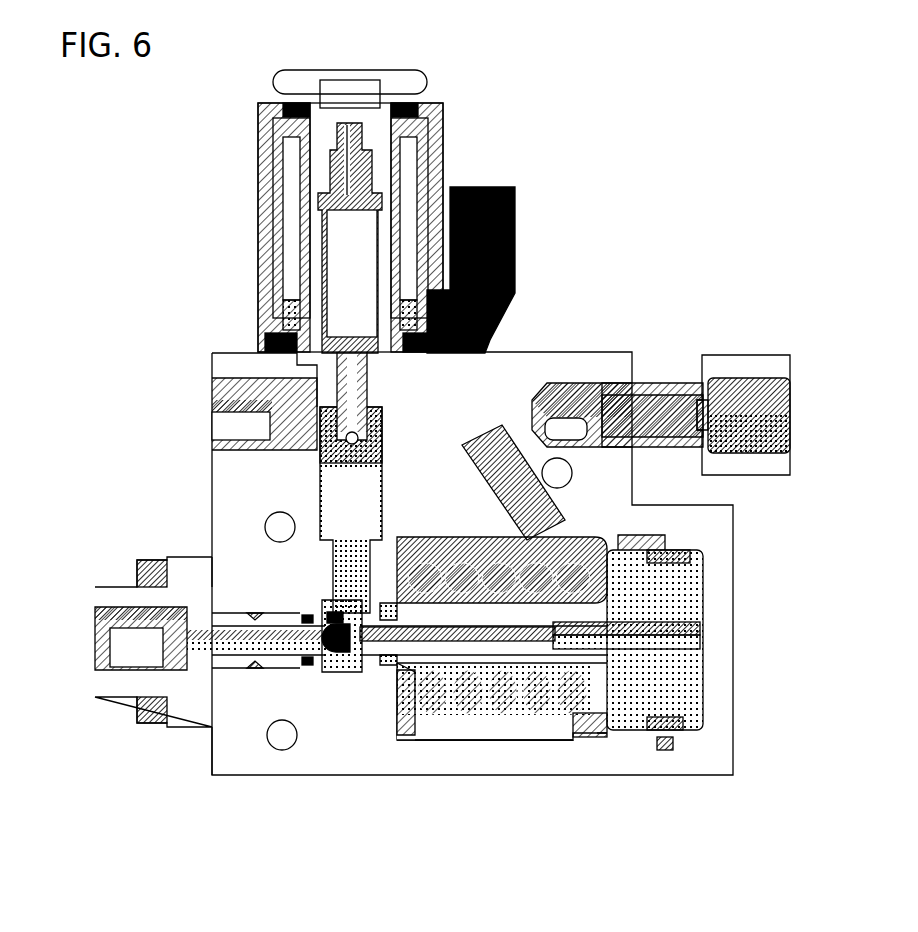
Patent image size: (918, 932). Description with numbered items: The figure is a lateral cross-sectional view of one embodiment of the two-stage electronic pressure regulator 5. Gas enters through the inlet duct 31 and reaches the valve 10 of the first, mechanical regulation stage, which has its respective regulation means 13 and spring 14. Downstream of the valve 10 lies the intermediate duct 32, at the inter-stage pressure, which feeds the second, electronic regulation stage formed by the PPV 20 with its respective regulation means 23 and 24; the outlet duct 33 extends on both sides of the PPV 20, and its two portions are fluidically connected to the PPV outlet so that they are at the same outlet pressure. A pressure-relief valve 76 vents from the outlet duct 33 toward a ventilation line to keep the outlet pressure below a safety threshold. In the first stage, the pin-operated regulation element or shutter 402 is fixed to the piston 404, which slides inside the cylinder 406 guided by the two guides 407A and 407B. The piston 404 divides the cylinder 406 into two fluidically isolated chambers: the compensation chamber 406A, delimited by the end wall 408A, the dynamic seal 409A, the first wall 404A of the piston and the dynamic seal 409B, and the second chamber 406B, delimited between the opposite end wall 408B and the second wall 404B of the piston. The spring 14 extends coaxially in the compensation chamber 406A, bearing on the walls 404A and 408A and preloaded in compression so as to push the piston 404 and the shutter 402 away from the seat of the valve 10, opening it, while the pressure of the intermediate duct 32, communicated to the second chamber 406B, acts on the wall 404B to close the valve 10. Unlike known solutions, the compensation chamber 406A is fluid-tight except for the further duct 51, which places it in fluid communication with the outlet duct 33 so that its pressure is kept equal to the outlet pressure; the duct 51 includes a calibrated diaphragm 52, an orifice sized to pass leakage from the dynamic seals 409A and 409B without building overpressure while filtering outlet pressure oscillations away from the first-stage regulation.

The two-stage electronic pressure regulator 5 is at (668, 121).
The valve 10 is at (333, 668).
The regulation means 13 is at (667, 648).
The spring 14 is at (500, 720).
The PPV 20 is at (357, 410).
The regulation means 23 is at (407, 173).
The regulation means 24 is at (332, 170).
The inlet duct 31 is at (95, 627).
The intermediate duct 32 is at (340, 510).
The outlet duct 33 is at (215, 425).
The duct 51 is at (457, 480).
The calibrated diaphragm 52 is at (533, 393).
The pressure-relief valve 76 is at (640, 377).
The regulation element 402 is at (350, 657).
The piston 404 is at (673, 613).
The first wall of the piston 404A is at (593, 545).
The second wall of the piston 404B is at (690, 573).
The cylinder 406 is at (487, 730).
The compensation chamber 406A is at (428, 740).
The second chamber 406B is at (687, 737).
The guide 407A is at (392, 713).
The guide 407B is at (637, 733).
The end wall of the cylinder 408A is at (404, 540).
The end wall of the cylinder 408B is at (688, 695).
The dynamic seal 409A is at (380, 604).
The dynamic seal 409B is at (655, 530).